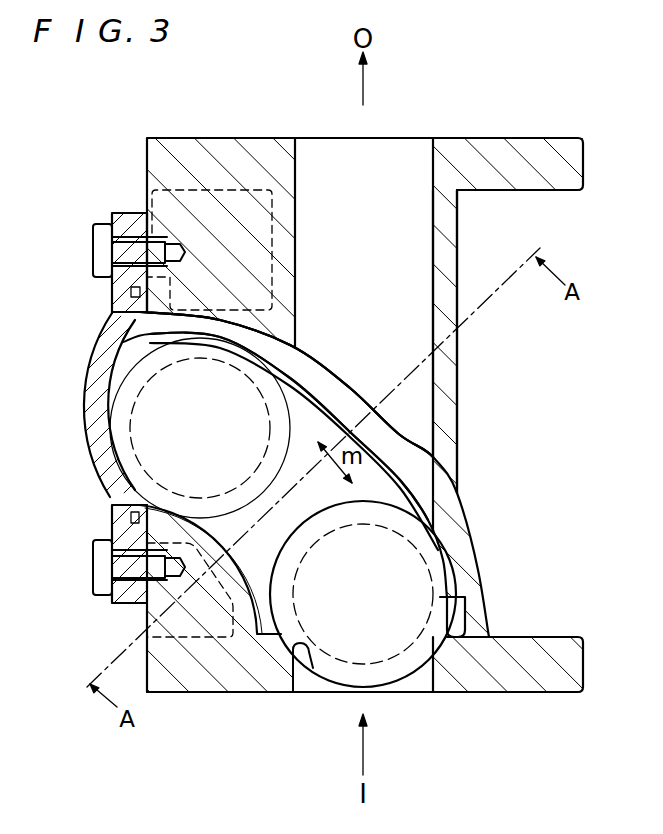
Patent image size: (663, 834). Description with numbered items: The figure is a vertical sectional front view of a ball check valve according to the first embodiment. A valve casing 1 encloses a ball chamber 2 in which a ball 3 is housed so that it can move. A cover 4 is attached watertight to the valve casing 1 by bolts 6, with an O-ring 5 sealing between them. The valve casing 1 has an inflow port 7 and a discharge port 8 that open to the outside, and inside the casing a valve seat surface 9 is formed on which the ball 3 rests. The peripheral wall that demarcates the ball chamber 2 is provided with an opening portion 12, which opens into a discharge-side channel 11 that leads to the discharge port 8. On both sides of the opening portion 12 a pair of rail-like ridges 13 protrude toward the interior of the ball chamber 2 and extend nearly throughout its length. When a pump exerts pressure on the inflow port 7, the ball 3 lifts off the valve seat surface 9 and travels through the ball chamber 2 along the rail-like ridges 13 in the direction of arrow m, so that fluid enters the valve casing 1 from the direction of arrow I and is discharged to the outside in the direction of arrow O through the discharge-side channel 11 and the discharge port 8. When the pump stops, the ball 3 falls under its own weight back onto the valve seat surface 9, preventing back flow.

The valve casing 1 is at (452, 381).
The ball chamber 2 is at (317, 415).
The ball 3 is at (85, 393).
The cover 4 is at (100, 345).
The O-ring 5 is at (131, 292).
The bolts 6 is at (93, 588).
The inflow port 7 is at (413, 692).
The discharge port 8 is at (415, 138).
The valve seat surface 9 is at (300, 670).
The discharge-side channel 11 is at (420, 230).
The opening portion 12 is at (400, 437).
The rail-like ridges 13 is at (400, 480).